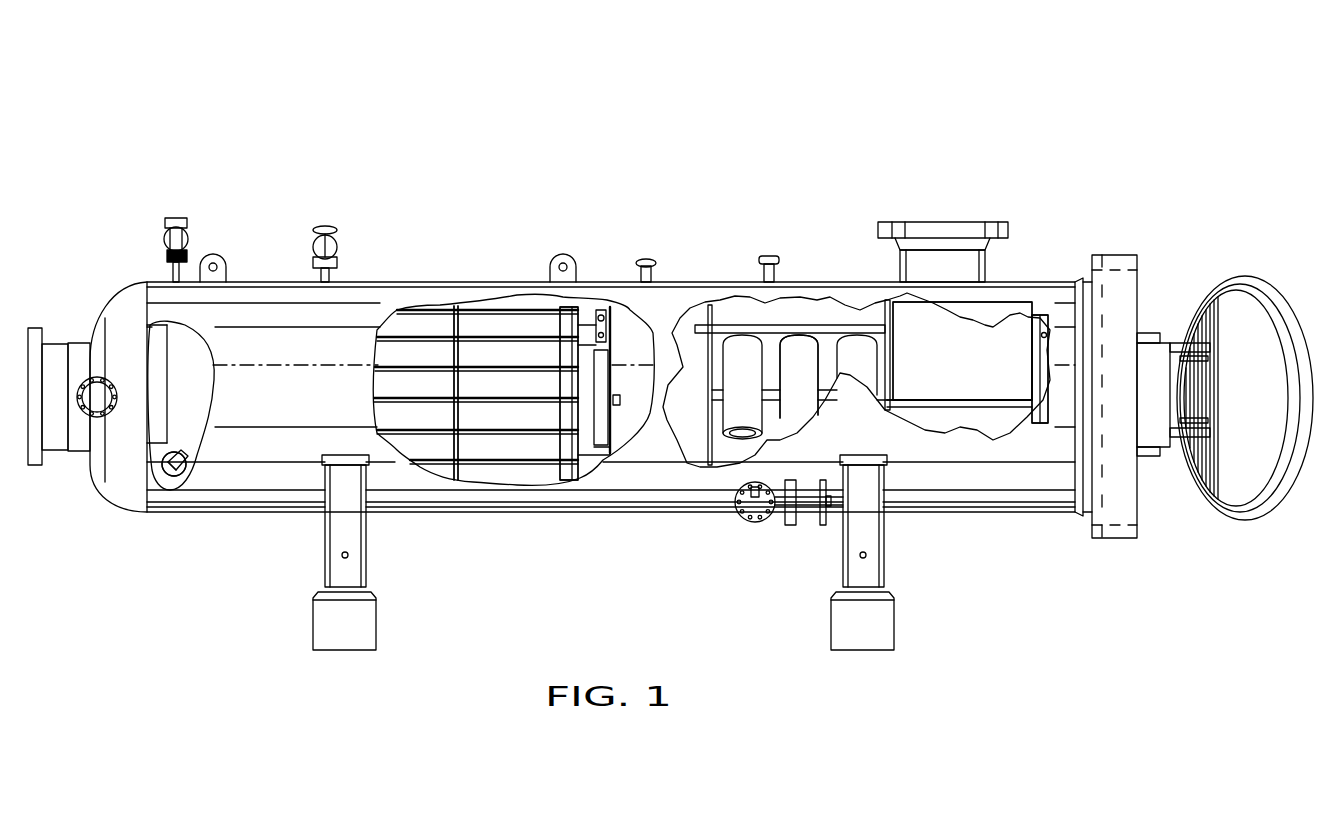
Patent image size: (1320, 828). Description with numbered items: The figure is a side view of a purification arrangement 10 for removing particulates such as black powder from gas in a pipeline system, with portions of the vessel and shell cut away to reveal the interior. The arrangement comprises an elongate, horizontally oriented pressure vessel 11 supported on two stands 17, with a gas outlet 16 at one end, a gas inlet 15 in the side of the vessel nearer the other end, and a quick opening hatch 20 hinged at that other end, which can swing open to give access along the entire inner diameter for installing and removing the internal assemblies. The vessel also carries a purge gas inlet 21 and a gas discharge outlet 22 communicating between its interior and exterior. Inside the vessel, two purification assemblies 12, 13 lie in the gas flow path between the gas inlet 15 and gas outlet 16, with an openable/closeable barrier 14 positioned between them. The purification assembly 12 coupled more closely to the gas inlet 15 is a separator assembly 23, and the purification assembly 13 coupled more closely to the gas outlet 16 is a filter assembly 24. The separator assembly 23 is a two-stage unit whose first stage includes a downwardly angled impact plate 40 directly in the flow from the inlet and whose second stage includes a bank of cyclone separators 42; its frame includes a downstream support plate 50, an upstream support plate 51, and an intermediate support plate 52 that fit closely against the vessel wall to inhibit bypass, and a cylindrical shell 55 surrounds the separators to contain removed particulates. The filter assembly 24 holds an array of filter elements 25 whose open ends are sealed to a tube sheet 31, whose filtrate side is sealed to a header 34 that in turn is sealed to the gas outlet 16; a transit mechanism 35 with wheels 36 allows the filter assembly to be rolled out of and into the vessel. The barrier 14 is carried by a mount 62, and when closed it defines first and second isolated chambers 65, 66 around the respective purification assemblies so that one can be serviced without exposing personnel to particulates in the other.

The purification arrangement 10 is at (106, 147).
The pressure vessel 11 is at (272, 485).
The purification assembly 12 is at (1000, 350).
The purification assembly 13 is at (472, 357).
The openable/closeable barrier 14 is at (613, 363).
The gas inlet 15 is at (955, 222).
The gas outlet 16 is at (30, 353).
The stands 17 is at (366, 566).
The quick opening hatch 20 is at (1246, 278).
The purge gas inlet 21 is at (326, 227).
The gas discharge outlet 22 is at (648, 258).
The separator assembly 23 is at (1040, 369).
The filter assembly 24 is at (569, 393).
The filter elements 25 is at (497, 405).
The tube sheet 31 is at (577, 440).
The header 34 is at (184, 367).
The transit mechanism 35 is at (173, 480).
The wheels 36 is at (174, 464).
The impact plate 40 is at (965, 375).
The cyclone separators 42 is at (735, 355).
The downstream support plate 50 is at (683, 373).
The upstream support plate 51 is at (1035, 352).
The intermediate support plate 52 is at (859, 335).
The shell 55 is at (838, 395).
The mount 62 is at (603, 357).
The first isolated chamber 65 is at (653, 400).
The second isolated chamber 66 is at (588, 397).